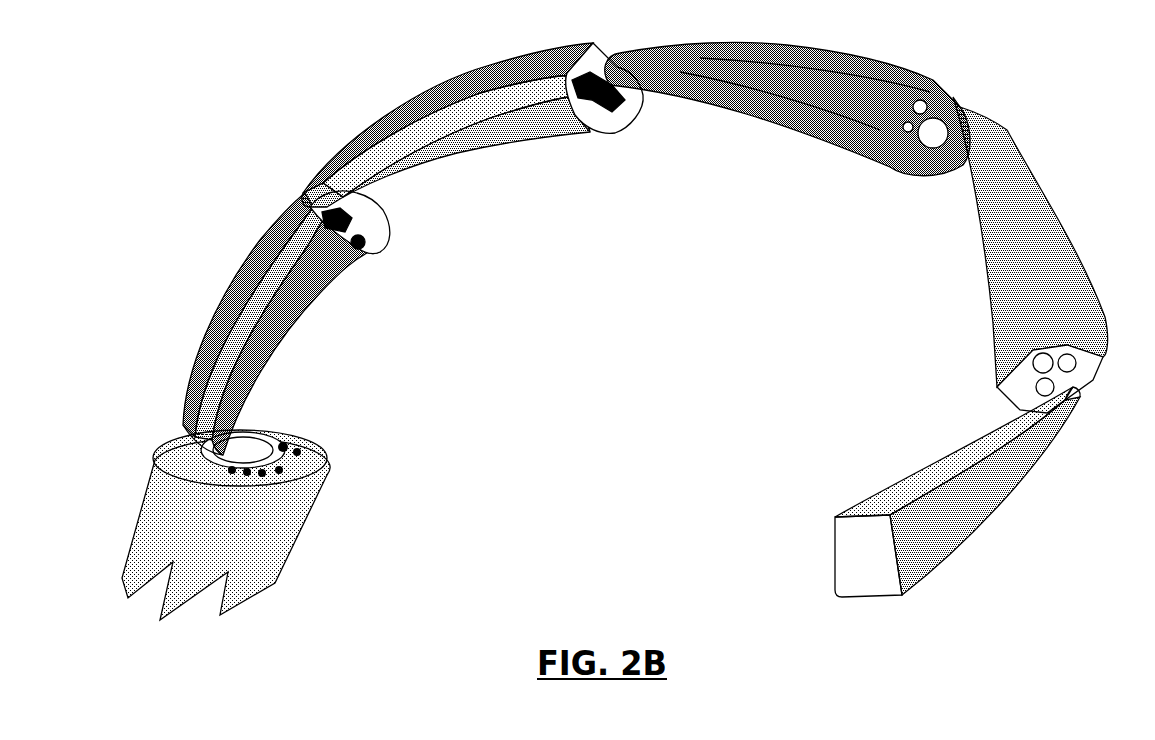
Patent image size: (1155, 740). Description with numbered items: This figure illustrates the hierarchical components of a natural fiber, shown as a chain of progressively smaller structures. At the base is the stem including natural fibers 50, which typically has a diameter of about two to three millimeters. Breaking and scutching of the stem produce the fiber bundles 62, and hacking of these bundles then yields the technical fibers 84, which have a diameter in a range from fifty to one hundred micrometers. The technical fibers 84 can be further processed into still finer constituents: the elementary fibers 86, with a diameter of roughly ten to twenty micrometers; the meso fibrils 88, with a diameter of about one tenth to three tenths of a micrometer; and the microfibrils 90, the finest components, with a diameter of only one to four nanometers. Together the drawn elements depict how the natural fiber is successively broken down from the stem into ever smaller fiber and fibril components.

The stem including natural fibers 50 is at (136, 520).
The fiber bundles 62 is at (222, 298).
The technical fibers 84 is at (371, 128).
The elementary fibers 86 is at (925, 73).
The meso fibrils 88 is at (1015, 153).
The microfibrils 90 is at (933, 480).